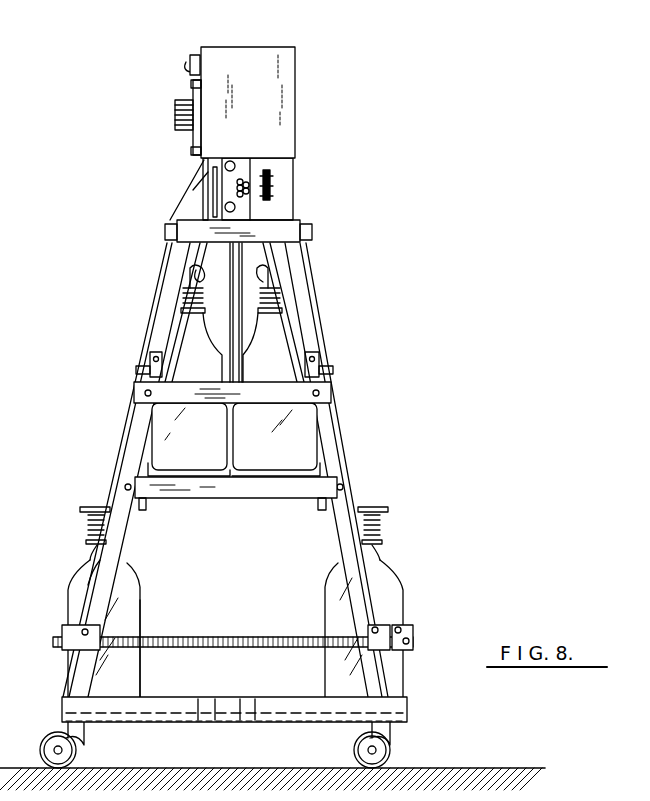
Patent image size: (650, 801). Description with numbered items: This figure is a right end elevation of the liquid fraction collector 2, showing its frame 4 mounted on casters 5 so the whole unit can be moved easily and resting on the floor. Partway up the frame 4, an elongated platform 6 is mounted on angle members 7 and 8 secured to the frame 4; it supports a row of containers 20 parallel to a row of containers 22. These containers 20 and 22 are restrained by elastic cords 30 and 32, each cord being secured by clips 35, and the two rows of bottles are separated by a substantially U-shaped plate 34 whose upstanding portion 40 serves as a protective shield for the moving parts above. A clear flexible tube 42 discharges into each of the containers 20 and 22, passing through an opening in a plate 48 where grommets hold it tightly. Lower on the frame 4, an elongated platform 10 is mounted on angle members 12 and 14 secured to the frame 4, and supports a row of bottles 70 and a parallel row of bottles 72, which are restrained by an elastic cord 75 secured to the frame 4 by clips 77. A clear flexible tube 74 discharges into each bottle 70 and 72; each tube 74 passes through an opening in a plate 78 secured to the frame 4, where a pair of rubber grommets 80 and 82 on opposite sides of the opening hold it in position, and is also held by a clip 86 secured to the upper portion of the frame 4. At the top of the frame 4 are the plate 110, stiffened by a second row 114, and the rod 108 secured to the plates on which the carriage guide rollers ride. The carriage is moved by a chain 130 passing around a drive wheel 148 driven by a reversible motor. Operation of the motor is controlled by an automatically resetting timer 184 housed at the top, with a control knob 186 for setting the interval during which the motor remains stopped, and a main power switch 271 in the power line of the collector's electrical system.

The liquid fraction collector 2 is at (82, 106).
The main power switch 271 is at (190, 73).
The automatically resetting timer 184 is at (285, 85).
The control knob 186 is at (174, 118).
The rod 108 is at (232, 160).
The plate 110 is at (243, 168).
The chain 130 is at (249, 185).
The drive wheel 148 is at (272, 184).
The second row 114 is at (236, 207).
The upstanding portion 40 is at (200, 193).
The clear flexible tube 42 is at (213, 203).
The clear flexible tube 74 is at (178, 200).
The clip 86 is at (164, 232).
The frame 4 is at (252, 241).
The plate 48 is at (190, 294).
The substantially U-shaped plate 34 is at (262, 293).
The container 20 is at (298, 345).
The elastic cord 32 is at (148, 364).
The elastic cord 30 is at (322, 365).
The clip 35 is at (136, 386).
The container 22 is at (160, 420).
The elongated platform 6 is at (233, 462).
The angle member 7 is at (150, 464).
The angle member 8 is at (320, 468).
The rubber grommet 80 is at (374, 506).
The plate 78 is at (143, 504).
The rubber grommet 82 is at (384, 530).
The bottle 72 is at (78, 580).
The bottle 70 is at (397, 585).
The elastic cord 75 is at (258, 638).
The clip 77 is at (366, 628).
The elongated platform 10 is at (215, 716).
The angle member 14 is at (243, 703).
The angle member 12 is at (392, 705).
The caster 5 is at (78, 751).